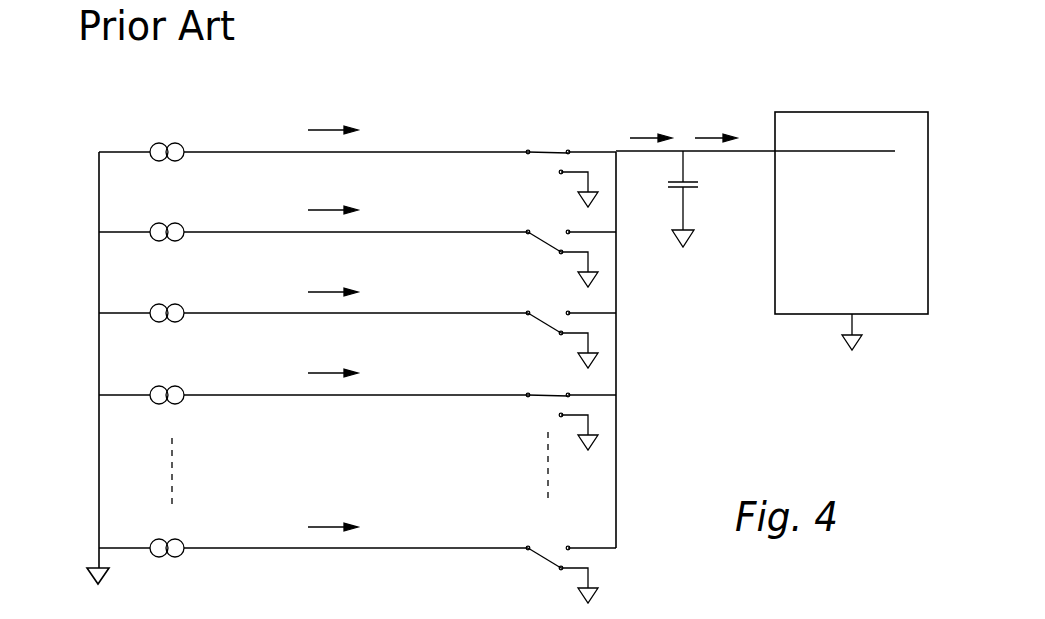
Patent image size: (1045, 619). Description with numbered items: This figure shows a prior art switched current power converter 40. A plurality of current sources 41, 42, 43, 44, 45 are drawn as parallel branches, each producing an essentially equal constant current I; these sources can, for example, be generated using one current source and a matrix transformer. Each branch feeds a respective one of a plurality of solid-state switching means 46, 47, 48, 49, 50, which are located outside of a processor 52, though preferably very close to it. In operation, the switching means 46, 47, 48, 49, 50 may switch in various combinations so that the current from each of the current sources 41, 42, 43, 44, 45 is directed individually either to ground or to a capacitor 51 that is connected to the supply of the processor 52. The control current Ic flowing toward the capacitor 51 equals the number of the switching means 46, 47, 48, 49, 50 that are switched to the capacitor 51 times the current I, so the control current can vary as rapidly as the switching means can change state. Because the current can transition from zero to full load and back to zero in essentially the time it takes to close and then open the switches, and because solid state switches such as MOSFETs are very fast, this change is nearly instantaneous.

The switched current power converter 40 is at (430, 43).
The current source 41 is at (160, 123).
The current source 42 is at (138, 218).
The current source 43 is at (143, 299).
The current source 44 is at (146, 384).
The current source 45 is at (168, 531).
The solid-state switching means 46 is at (575, 131).
The solid-state switching means 47 is at (606, 250).
The solid-state switching means 48 is at (606, 335).
The solid-state switching means 49 is at (598, 410).
The solid-state switching means 50 is at (595, 565).
The capacitor 51 is at (721, 184).
The processor 52 is at (875, 89).